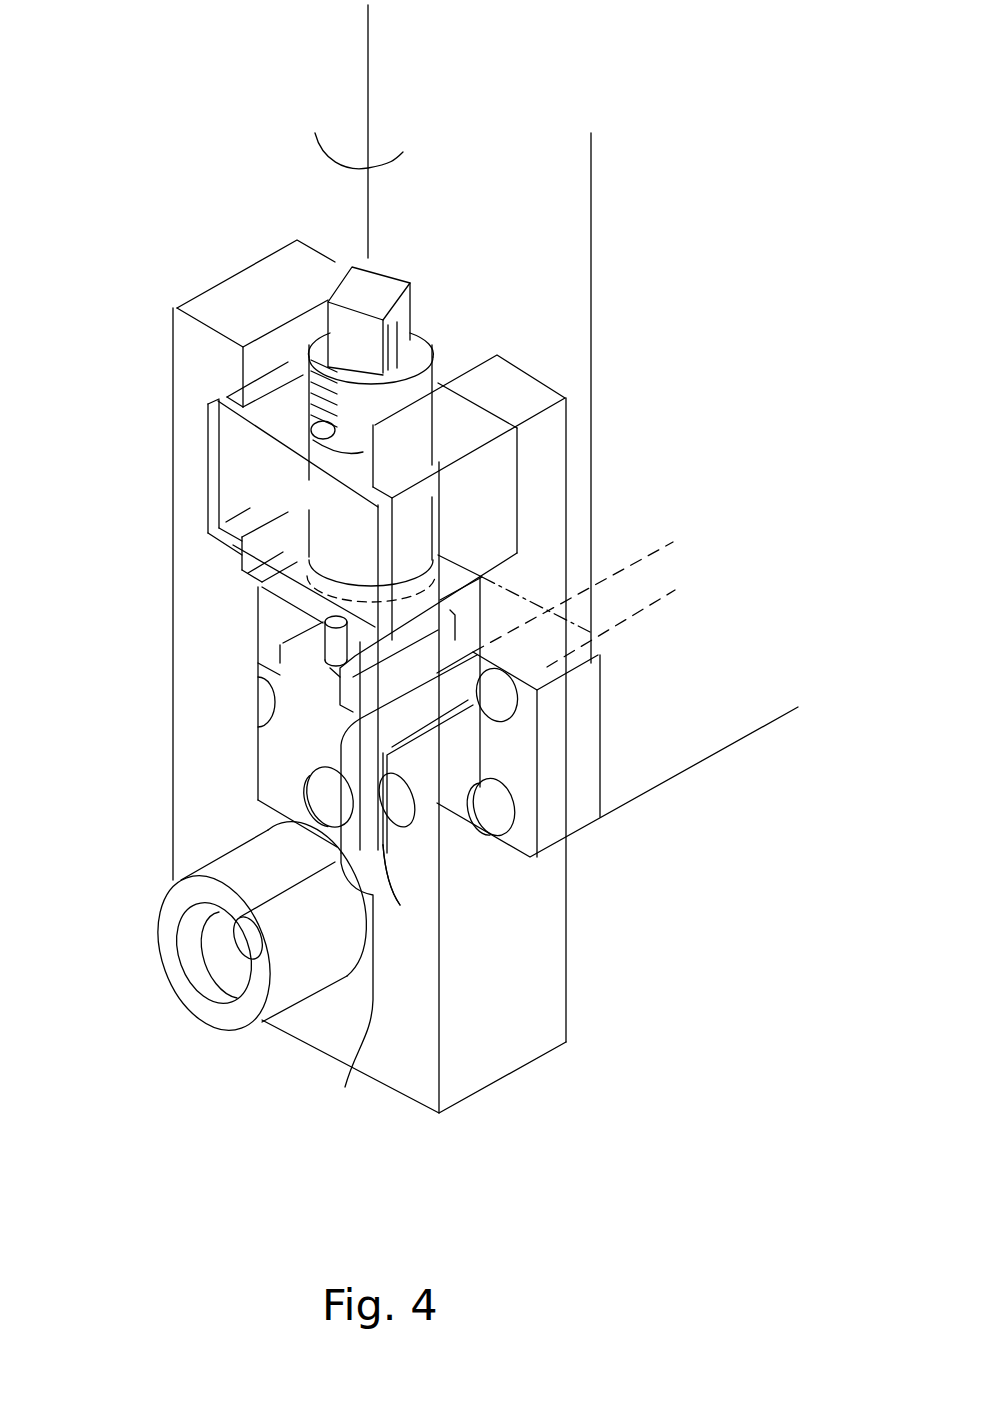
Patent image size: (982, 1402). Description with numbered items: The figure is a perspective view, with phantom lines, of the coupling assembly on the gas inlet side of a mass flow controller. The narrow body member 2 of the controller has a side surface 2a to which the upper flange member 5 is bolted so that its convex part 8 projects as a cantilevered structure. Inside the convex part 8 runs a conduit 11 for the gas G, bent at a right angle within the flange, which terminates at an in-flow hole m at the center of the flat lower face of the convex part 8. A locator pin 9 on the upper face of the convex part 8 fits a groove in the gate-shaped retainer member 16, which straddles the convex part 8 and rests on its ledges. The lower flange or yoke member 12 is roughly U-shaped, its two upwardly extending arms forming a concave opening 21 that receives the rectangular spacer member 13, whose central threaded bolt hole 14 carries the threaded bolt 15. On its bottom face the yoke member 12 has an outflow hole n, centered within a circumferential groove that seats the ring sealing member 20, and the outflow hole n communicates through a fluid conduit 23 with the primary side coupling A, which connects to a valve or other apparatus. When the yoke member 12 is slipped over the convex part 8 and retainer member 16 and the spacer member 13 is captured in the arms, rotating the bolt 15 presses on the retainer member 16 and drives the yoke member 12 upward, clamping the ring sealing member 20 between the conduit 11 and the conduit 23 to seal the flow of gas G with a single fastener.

The body member 2 is at (364, 82).
The side surface 2a is at (343, 130).
The concave opening 21 is at (265, 357).
The spacer member 13 is at (252, 432).
The bolt hole 14 is at (330, 413).
The threaded bolt 15 is at (423, 347).
The retainer member 16 is at (457, 578).
The upper flange member 5 is at (283, 747).
The convex part 8 is at (262, 776).
The locator pin 9 is at (322, 652).
The in-flow hole m is at (320, 848).
The ring sealing member 20 is at (373, 820).
The conduit 11 is at (457, 697).
The primary side coupling A is at (290, 983).
The fluid conduit 23 is at (359, 945).
The outflow hole n is at (395, 899).
The gas G is at (150, 993).
The lower flange or yoke member 12 is at (470, 1100).